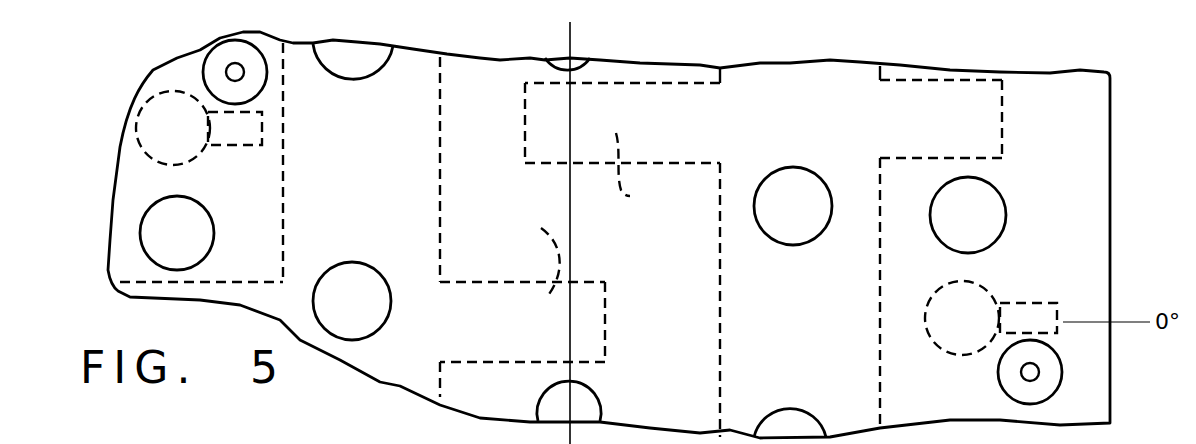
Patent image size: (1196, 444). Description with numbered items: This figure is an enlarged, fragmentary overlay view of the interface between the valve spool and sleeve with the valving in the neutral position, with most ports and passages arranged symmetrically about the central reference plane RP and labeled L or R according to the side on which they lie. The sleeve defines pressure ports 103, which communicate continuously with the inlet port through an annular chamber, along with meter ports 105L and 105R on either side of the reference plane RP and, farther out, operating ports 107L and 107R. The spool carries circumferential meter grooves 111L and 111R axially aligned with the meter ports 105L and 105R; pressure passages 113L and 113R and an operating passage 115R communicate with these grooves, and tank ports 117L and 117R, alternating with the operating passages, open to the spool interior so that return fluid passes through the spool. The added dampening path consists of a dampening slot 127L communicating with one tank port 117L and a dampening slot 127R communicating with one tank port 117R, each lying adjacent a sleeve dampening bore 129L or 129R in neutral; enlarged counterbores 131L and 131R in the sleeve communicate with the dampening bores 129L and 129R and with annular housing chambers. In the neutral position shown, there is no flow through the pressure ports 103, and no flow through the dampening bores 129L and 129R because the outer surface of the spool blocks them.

The pressure port 103 is at (585, 413).
The meter port 105L is at (357, 72).
The meter port 105R is at (772, 173).
The operating port 107L is at (188, 233).
The operating port 107R is at (993, 217).
The meter groove 111L is at (362, 220).
The meter groove 111R is at (763, 251).
The pressure passage 113L is at (526, 260).
The pressure passage 113R is at (651, 171).
The operating passage 115R is at (967, 130).
The tank port 117L is at (180, 140).
The tank port 117R is at (977, 293).
The dampening slot 127L is at (262, 127).
The dampening slot 127R is at (1022, 312).
The dampening bore 129L is at (233, 73).
The dampening bore 129R is at (1033, 372).
The counterbore 131L is at (240, 52).
The counterbore 131R is at (1028, 390).
The reference plane RP is at (570, 33).